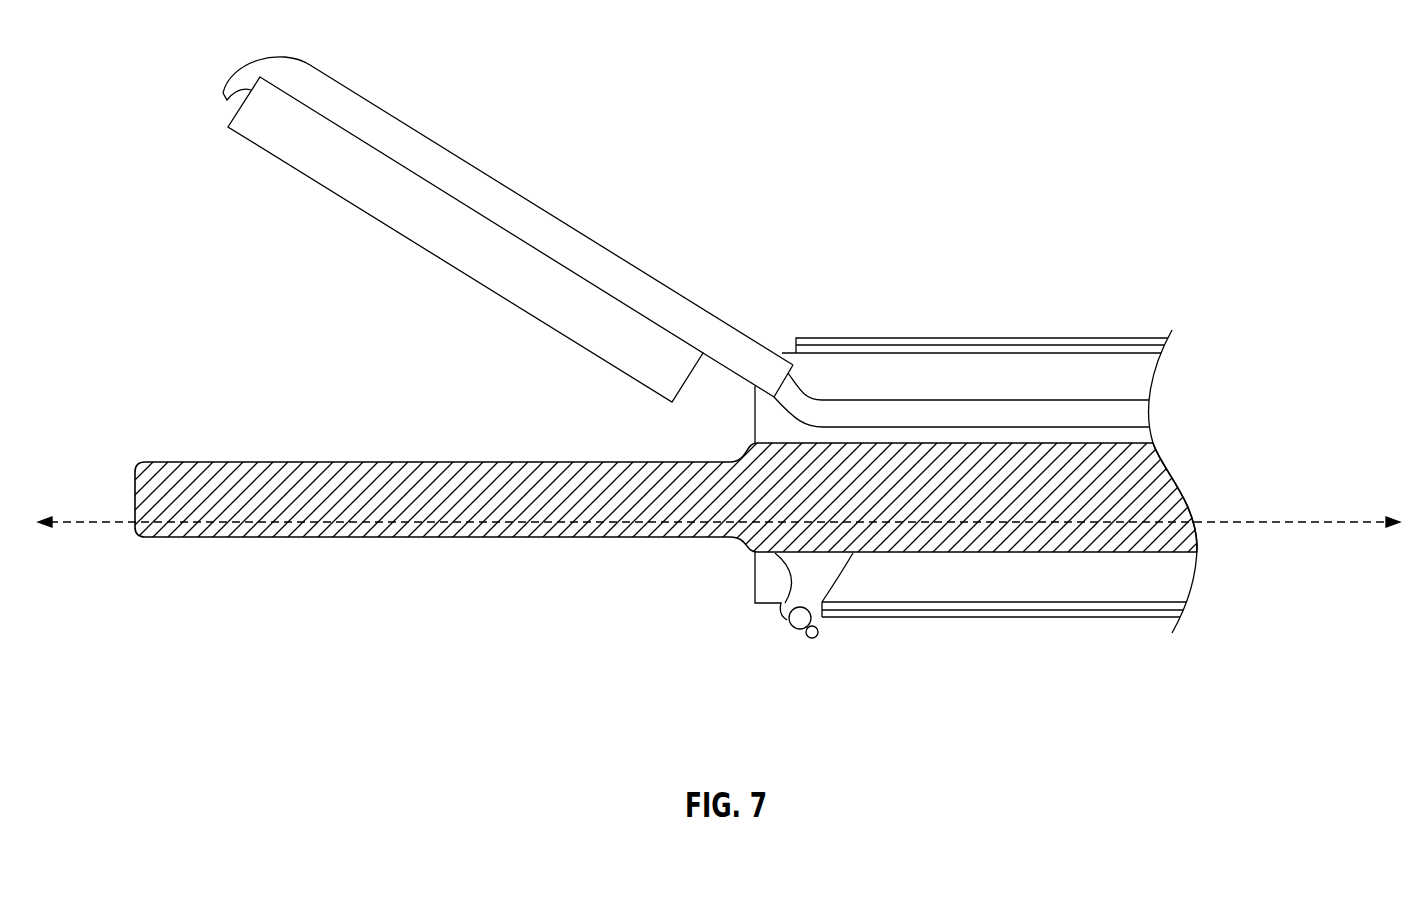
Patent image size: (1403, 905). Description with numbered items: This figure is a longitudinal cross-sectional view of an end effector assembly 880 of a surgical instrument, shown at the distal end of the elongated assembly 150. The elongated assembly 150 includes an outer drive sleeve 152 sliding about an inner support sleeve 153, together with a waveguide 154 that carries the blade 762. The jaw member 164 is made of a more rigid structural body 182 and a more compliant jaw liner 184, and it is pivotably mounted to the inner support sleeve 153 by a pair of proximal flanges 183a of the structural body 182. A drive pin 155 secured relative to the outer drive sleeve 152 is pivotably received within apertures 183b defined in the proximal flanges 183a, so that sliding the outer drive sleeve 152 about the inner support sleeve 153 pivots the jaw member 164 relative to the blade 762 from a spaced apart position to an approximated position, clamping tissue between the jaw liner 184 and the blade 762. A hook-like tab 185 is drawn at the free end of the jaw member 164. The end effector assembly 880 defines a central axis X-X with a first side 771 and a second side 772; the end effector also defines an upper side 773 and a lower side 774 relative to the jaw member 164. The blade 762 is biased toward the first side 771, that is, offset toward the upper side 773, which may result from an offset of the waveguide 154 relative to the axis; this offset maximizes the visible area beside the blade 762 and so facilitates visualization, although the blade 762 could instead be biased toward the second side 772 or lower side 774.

The elongated assembly 150 is at (1100, 310).
The outer drive sleeve 152 is at (955, 337).
The inner support sleeve 153 is at (940, 610).
The waveguide 154 is at (1108, 583).
The drive pin 155 is at (790, 626).
The jaw member 164 is at (222, 55).
The structural body 182 is at (683, 315).
The proximal flanges 183a is at (807, 565).
The apertures 183b is at (820, 627).
The jaw liner 184 is at (328, 173).
The hook tab 185 is at (228, 96).
The blade 762 is at (116, 470).
The first side 771 is at (1285, 505).
The second side 772 is at (1296, 565).
The upper side 773 is at (832, 337).
The lower side 774 is at (1038, 618).
The end effector assembly 880 is at (556, 162).